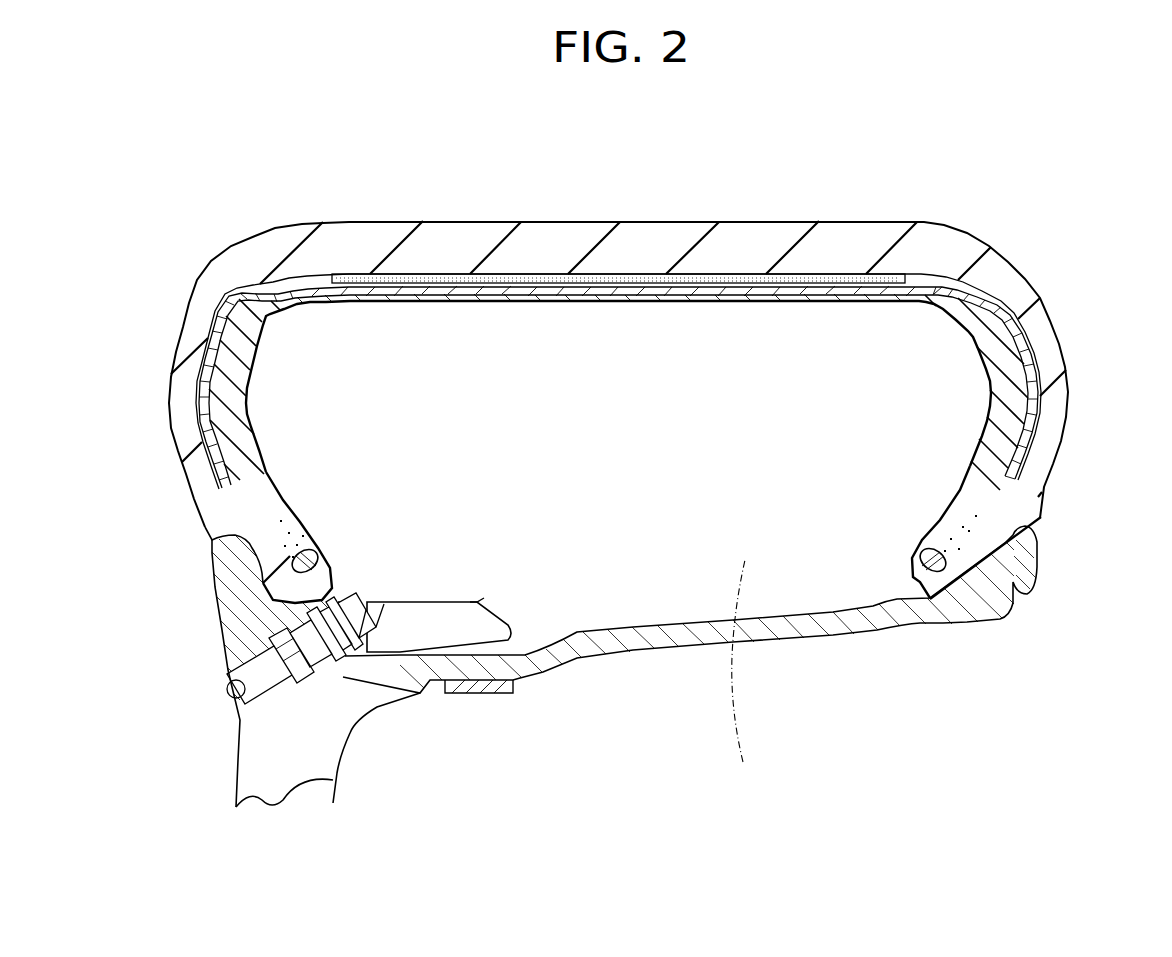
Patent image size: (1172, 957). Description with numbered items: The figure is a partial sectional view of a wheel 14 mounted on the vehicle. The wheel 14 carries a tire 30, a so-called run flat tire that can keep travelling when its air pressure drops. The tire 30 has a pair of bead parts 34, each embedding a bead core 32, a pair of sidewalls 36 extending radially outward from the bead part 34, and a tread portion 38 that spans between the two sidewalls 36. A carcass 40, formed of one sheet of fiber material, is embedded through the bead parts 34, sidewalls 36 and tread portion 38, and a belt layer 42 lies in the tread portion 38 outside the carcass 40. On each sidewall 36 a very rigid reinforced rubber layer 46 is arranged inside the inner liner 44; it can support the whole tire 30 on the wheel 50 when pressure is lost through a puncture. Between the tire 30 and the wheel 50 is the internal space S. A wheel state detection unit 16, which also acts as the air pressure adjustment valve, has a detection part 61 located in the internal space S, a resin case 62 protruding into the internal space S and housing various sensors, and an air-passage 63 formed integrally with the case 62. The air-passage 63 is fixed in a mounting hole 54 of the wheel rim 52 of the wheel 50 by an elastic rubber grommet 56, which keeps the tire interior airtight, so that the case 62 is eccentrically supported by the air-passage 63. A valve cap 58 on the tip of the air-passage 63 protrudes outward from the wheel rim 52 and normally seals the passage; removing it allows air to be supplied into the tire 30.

The wheel 14 is at (225, 241).
The wheel state detection unit 16 is at (441, 597).
The tire 30 is at (1010, 241).
The bead core 32 is at (313, 550).
The bead part 34 is at (326, 556).
The sidewall 36 is at (178, 349).
The tread portion 38 is at (600, 223).
The carcass 40 is at (186, 430).
The belt layer 42 is at (489, 266).
The inner liner 44 is at (606, 300).
The reinforced rubber layer 46 is at (182, 378).
The wheel 50 is at (262, 812).
The wheel rim 52 is at (216, 556).
The mounting hole 54 is at (245, 655).
The grommet 56 is at (372, 660).
The valve cap 58 is at (228, 693).
The detection part 61 is at (510, 624).
The case 62 is at (486, 598).
The air-passage 63 is at (331, 720).
The internal space S is at (744, 678).